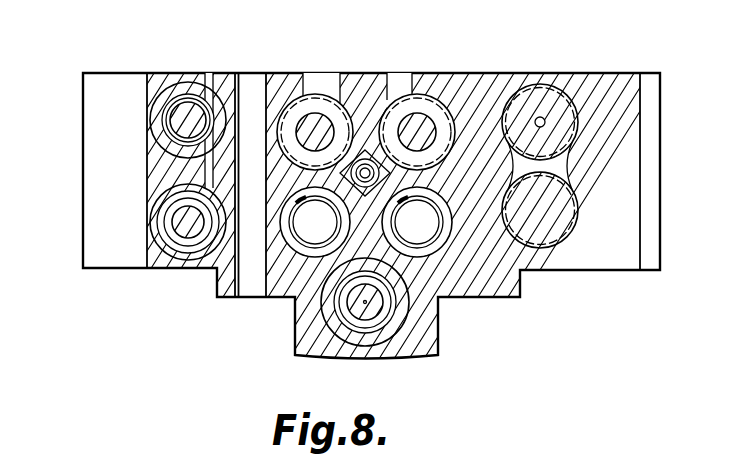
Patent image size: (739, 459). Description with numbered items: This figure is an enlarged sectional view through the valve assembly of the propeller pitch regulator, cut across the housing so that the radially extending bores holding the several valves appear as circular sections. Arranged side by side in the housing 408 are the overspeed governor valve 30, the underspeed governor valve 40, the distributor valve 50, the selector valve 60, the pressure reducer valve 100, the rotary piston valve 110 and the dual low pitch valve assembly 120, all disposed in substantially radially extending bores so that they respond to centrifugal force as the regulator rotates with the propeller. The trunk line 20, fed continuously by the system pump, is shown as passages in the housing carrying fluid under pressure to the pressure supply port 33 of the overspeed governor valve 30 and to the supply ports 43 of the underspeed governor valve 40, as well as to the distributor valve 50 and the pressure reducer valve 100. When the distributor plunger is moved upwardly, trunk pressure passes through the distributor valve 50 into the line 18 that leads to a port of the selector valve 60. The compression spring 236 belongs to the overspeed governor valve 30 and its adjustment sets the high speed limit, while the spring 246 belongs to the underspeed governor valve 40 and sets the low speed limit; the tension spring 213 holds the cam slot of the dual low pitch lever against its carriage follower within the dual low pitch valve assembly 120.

The line 18 is at (568, 162).
The trunk line 20 is at (212, 82).
The overspeed governor valve 30 is at (336, 194).
The pressure supply port 33 is at (312, 97).
The underspeed governor valve 40 is at (336, 198).
The ports 43 is at (388, 95).
The distributor valve 50 is at (545, 93).
The selector valve 60 is at (558, 240).
The pressure reducer valve 100 is at (181, 92).
The rotary piston valve 110 is at (185, 242).
The dual low pitch valve assembly 120 is at (380, 327).
The tension spring 213 is at (382, 176).
The compression spring 236 is at (312, 250).
The spring 246 is at (443, 227).
The valve body 408 is at (678, 311).